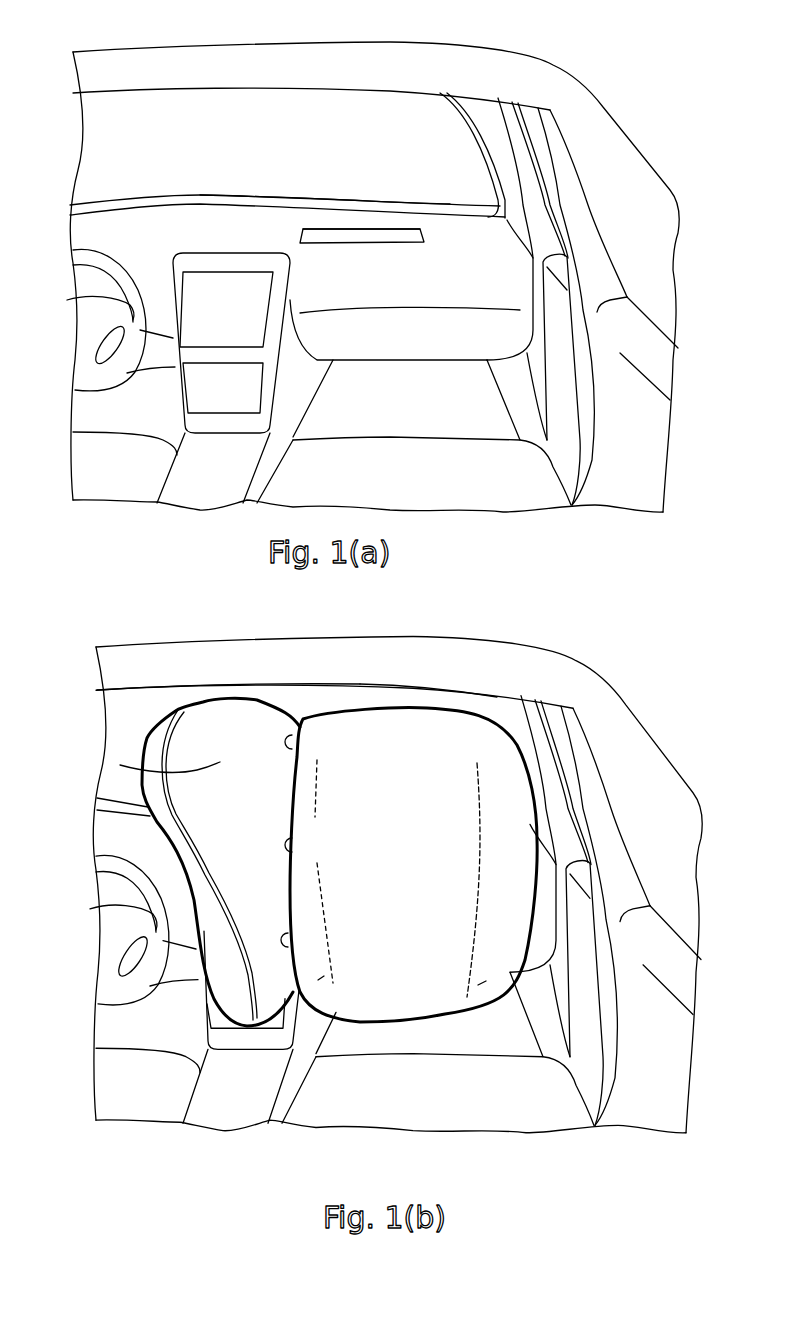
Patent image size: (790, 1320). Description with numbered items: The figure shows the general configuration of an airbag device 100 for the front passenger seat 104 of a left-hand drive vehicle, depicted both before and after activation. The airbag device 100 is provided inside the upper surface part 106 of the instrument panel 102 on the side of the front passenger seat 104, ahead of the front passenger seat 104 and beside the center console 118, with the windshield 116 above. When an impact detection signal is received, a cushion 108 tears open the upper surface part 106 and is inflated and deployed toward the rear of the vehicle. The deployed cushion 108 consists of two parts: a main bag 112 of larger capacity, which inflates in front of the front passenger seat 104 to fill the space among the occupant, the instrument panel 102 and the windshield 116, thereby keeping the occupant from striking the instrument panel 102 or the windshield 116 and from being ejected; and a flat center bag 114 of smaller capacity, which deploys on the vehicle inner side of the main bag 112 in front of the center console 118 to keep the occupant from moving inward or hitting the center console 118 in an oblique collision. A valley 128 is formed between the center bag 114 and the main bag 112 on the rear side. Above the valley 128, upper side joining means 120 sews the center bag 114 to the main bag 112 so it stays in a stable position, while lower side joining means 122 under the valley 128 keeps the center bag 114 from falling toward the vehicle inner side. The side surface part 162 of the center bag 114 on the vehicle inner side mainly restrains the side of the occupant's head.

In FIG. 1A, the airbag device 100 is at (384, 220).
In FIG. 1B, the airbag device 100 is at (270, 670).
In FIG. 1A, the instrument panel 102 is at (318, 222).
In FIG. 1A, the front passenger seat 104 is at (387, 457).
In FIG. 1B, the front passenger seat 104 is at (480, 1113).
In FIG. 1A, the upper surface part 106 is at (421, 236).
In FIG. 1B, the cushion 108 is at (403, 707).
In FIG. 1B, the main bag 112 is at (367, 720).
In FIG. 1B, the center bag 114 is at (150, 730).
In FIG. 1A, the windshield 116 is at (347, 109).
In FIG. 1B, the windshield 116 is at (173, 697).
In FIG. 1A, the center console 118 is at (213, 353).
In FIG. 1B, the center console 118 is at (243, 1037).
In FIG. 1B, the upper side joining means 120 is at (292, 742).
In FIG. 1B, the lower side joining means 122 is at (288, 940).
In FIG. 1B, the valley 128 is at (292, 845).
In FIG. 1B, the side surface part 162 is at (120, 765).